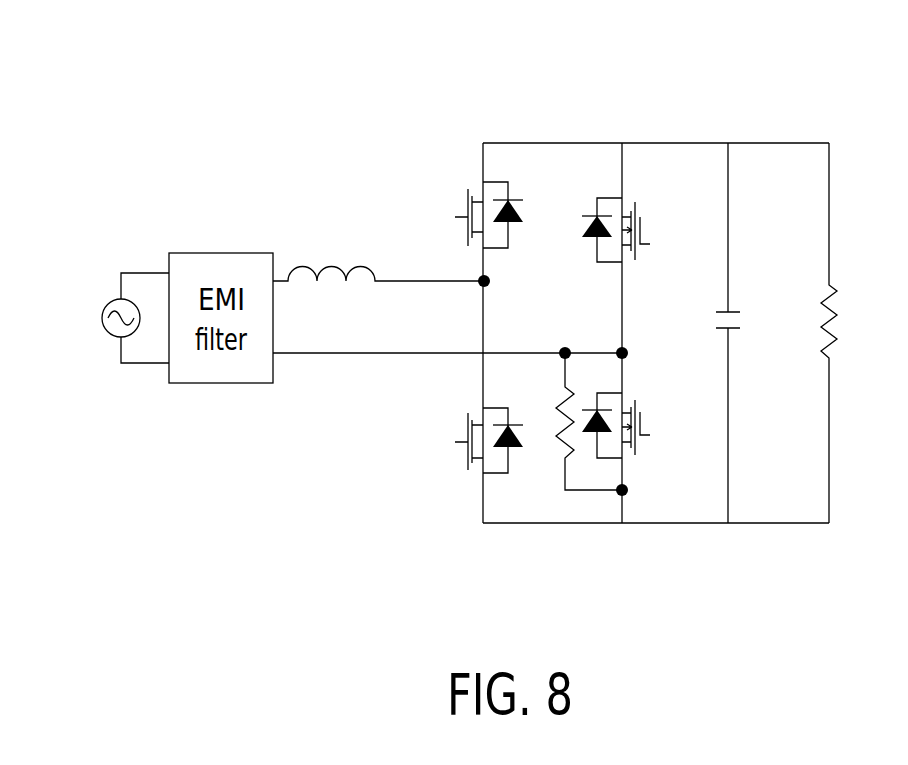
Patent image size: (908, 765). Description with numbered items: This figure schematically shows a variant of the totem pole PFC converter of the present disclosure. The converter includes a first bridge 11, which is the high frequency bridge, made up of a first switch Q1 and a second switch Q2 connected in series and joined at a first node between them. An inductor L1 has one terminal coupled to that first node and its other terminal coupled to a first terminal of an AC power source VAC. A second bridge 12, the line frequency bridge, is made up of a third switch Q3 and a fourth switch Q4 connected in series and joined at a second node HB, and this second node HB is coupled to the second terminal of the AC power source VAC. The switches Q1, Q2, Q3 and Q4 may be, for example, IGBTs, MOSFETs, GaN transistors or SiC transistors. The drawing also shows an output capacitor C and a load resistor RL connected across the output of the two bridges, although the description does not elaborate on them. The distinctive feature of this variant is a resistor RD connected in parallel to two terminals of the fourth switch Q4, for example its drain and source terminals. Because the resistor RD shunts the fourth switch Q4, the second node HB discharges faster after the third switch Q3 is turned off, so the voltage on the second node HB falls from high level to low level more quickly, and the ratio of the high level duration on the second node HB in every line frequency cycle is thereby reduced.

The first bridge 11 is at (482, 272).
The second bridge 12 is at (612, 273).
The first switch Q1 is at (475, 200).
The second switch Q2 is at (475, 425).
The third switch Q3 is at (625, 212).
The fourth switch Q4 is at (628, 411).
The inductor L1 is at (381, 255).
The output capacitor C is at (742, 333).
The load resistor RL is at (846, 333).
The resistor RD is at (578, 424).
The second node HB is at (450, 335).
The AC power source VAC is at (103, 318).